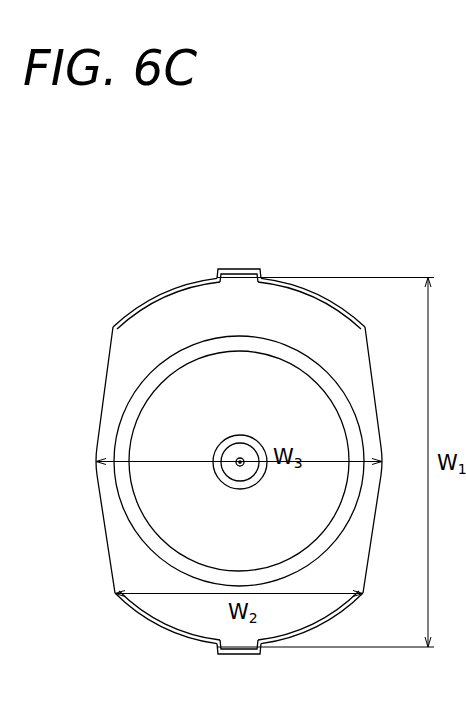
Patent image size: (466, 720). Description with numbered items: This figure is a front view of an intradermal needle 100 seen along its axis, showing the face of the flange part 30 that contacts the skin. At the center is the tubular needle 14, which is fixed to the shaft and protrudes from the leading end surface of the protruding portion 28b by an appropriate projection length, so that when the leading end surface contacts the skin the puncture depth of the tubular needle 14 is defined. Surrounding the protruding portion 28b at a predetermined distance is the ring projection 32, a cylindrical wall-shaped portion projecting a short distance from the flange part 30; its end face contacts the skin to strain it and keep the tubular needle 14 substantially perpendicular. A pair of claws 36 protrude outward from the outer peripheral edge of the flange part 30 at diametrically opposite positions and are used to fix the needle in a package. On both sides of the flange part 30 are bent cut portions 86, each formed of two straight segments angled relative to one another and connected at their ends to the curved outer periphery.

The intradermal needle 100 is at (108, 227).
The flange part 30 is at (303, 317).
The bent cut portions 86 is at (376, 388).
The claws 36 is at (241, 268).
The ring projection 32 is at (122, 490).
The protruding portion 28b is at (238, 454).
The tubular needle 14 is at (243, 467).